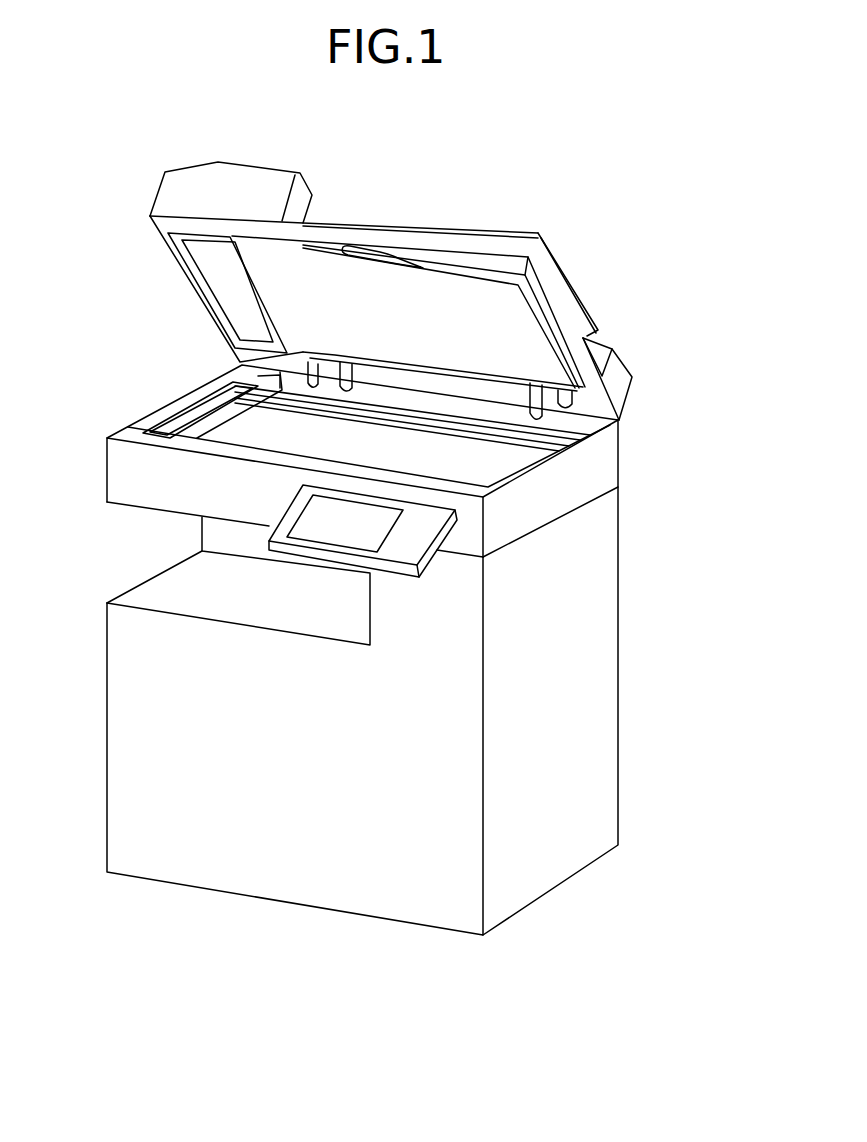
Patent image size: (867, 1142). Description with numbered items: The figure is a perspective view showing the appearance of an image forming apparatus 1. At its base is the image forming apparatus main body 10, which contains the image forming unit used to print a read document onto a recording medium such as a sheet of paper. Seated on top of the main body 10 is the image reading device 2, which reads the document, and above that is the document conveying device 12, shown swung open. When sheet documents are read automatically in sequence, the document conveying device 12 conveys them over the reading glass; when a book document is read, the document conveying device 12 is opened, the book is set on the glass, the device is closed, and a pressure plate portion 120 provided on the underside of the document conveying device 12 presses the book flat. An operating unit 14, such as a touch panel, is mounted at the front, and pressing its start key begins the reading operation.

The image forming apparatus 1 is at (691, 188).
The image reading device 2 is at (107, 468).
The image forming apparatus main body 10 is at (107, 743).
The document conveying device 12 is at (163, 178).
The pressure plate portion 120 is at (510, 338).
The operating unit 14 is at (437, 540).